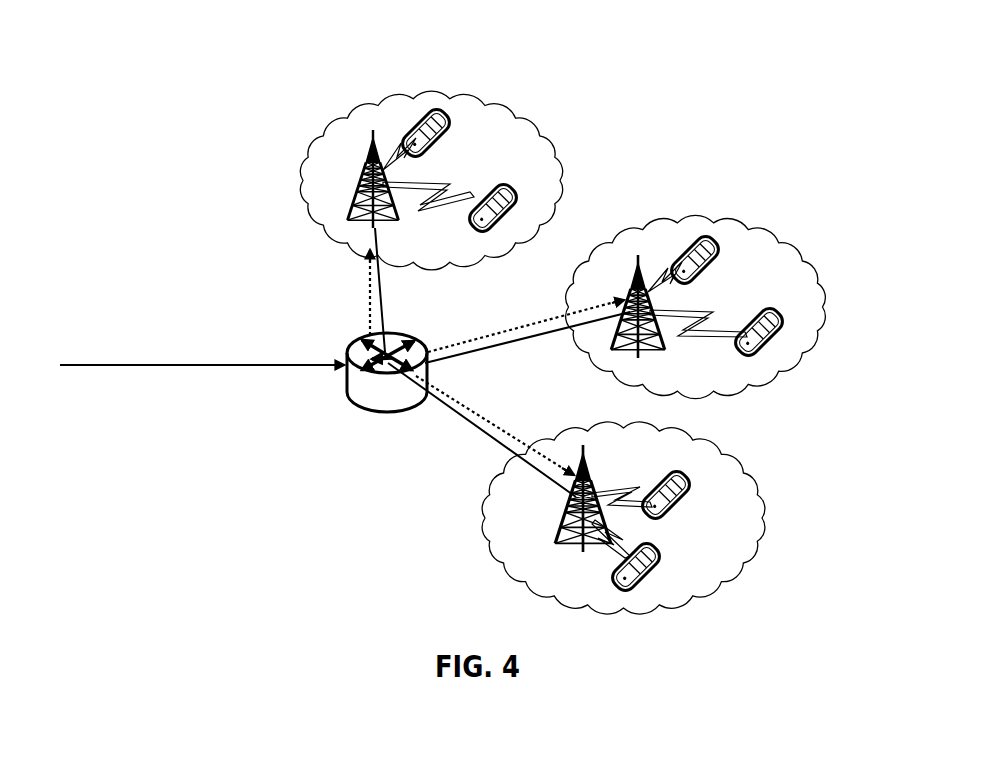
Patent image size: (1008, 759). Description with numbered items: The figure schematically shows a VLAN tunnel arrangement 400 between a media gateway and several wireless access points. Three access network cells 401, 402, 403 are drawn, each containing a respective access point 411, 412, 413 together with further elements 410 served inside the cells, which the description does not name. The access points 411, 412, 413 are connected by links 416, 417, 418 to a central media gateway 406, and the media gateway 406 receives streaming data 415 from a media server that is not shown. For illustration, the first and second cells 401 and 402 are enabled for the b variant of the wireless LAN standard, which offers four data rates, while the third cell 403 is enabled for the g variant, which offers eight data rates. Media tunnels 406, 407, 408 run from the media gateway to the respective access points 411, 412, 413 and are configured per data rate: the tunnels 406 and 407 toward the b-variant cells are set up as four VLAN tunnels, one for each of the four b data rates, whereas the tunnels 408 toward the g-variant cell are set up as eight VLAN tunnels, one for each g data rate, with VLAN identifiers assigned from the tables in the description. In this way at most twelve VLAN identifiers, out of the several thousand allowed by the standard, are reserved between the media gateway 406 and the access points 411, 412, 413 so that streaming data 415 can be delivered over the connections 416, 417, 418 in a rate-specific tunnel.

The wireless communication system 400 is at (333, 486).
The access network cell 401 is at (535, 164).
The access network cell 402 is at (787, 295).
The access network cell 403 is at (735, 545).
The media gateway 406 is at (365, 294).
The media tunnel 407 is at (535, 323).
The media tunnels 408 is at (493, 435).
The mobile devices 410 is at (500, 187).
The access point 411 is at (382, 173).
The access point 412 is at (648, 295).
The access point 413 is at (588, 462).
The streaming data reception 415 is at (203, 365).
The connection 416 is at (383, 321).
The connection 417 is at (503, 343).
The connection 418 is at (457, 420).